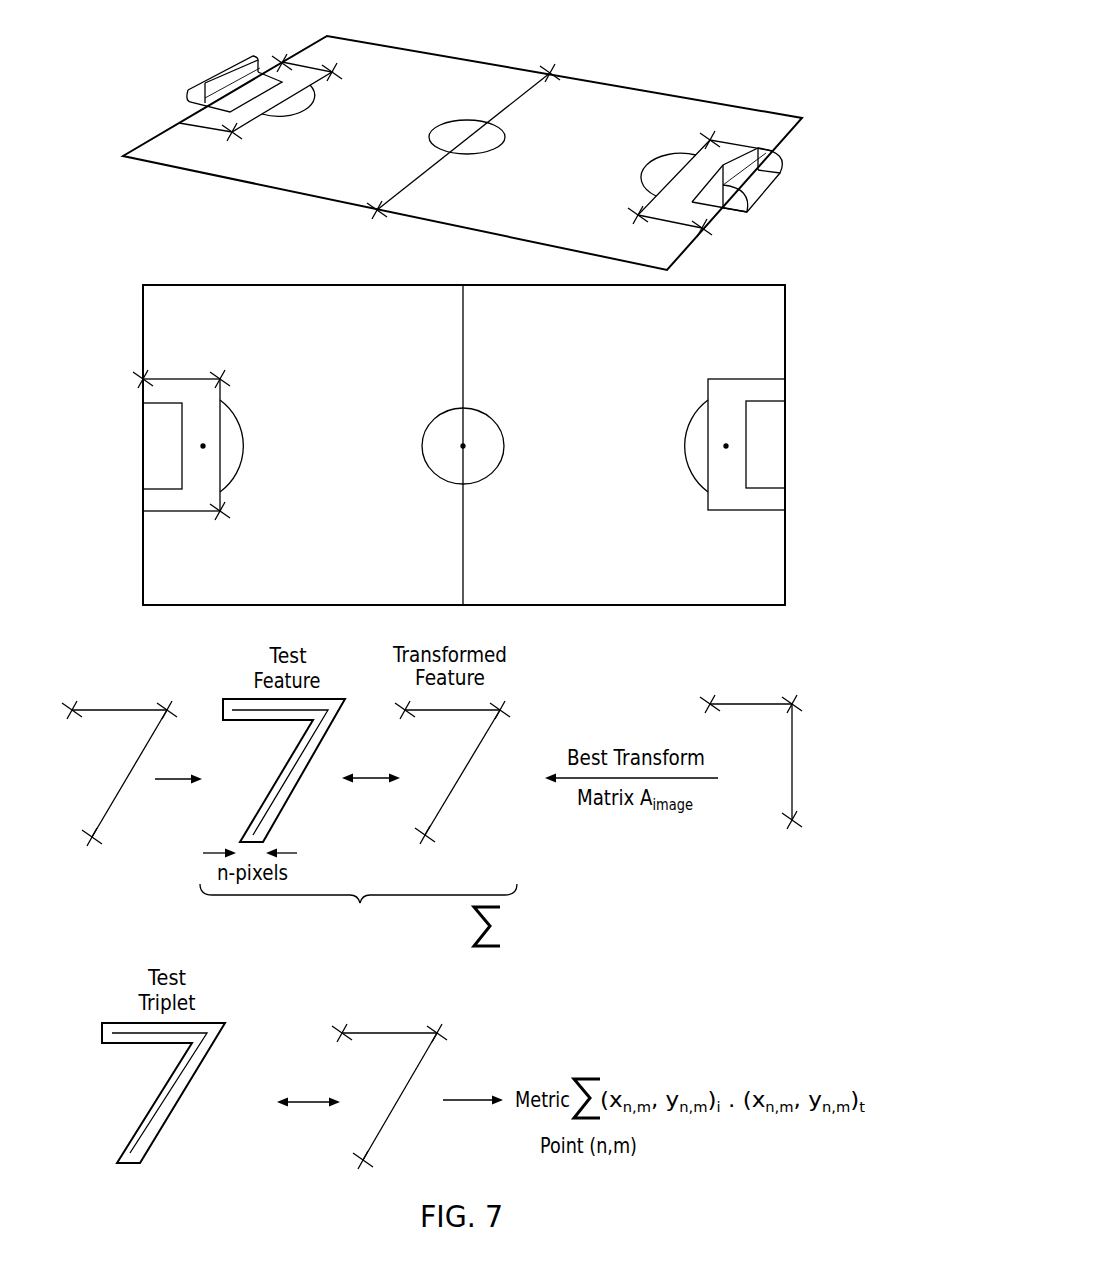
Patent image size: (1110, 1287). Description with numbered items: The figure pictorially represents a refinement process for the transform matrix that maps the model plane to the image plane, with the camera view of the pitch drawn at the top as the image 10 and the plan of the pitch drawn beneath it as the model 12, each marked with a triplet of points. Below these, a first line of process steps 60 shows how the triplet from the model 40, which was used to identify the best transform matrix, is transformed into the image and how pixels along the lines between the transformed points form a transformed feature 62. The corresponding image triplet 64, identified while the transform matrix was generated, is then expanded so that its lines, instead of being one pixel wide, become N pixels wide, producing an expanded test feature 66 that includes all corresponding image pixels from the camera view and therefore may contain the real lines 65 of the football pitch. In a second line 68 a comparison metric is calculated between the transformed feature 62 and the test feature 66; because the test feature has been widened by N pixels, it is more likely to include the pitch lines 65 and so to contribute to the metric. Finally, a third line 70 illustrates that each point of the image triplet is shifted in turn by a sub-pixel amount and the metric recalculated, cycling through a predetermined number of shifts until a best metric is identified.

The 2D image of playing field 10 is at (806, 198).
The model of playing field 12 is at (806, 442).
The model triplet 40 is at (783, 729).
The first line of process steps 60 is at (800, 753).
The transformed feature 62 is at (468, 772).
The image triplet 64 is at (120, 702).
The real lines 65 is at (262, 715).
The expanded test feature 66 is at (307, 777).
The second line 68 is at (197, 925).
The third line 70 is at (118, 1093).